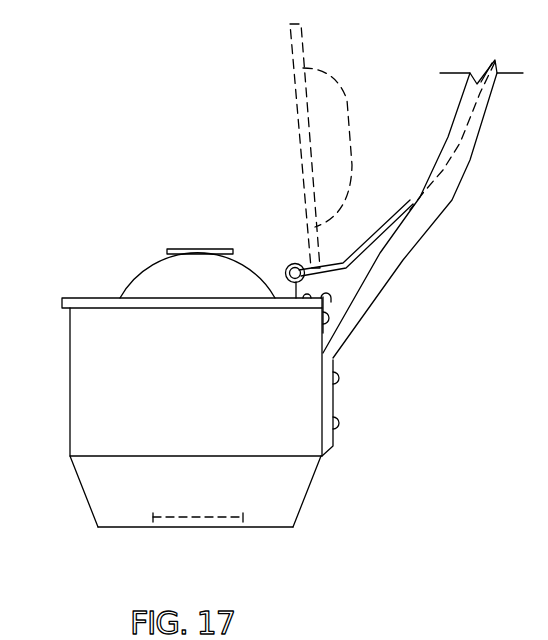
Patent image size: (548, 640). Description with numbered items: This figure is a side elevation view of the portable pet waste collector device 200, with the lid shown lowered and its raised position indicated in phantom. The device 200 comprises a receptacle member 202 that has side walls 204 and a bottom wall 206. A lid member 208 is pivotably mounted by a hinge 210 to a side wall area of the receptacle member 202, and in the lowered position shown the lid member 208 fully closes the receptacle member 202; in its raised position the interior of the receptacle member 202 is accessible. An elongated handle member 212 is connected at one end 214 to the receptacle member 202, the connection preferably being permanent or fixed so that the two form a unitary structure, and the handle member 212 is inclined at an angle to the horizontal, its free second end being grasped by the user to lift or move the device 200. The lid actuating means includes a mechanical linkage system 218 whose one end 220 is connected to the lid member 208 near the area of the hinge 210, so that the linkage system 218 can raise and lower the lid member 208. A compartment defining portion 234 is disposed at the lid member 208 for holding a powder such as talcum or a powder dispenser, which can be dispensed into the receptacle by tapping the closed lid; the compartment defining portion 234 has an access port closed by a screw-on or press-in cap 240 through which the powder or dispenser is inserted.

The portable pet waste collector device 200 is at (228, 570).
The receptacle member 202 is at (330, 482).
The side walls 204 is at (103, 389).
The bottom wall 206 is at (138, 527).
The lid member 208 is at (96, 297).
The hinge 210 is at (330, 302).
The elongated handle member 212 is at (447, 183).
The one end of the handle member 214 is at (334, 393).
The mechanical linkage system 218 is at (373, 240).
The first end portion of the link member 220 is at (289, 266).
The compartment defining portion 234 is at (150, 277).
The cap 240 is at (187, 248).